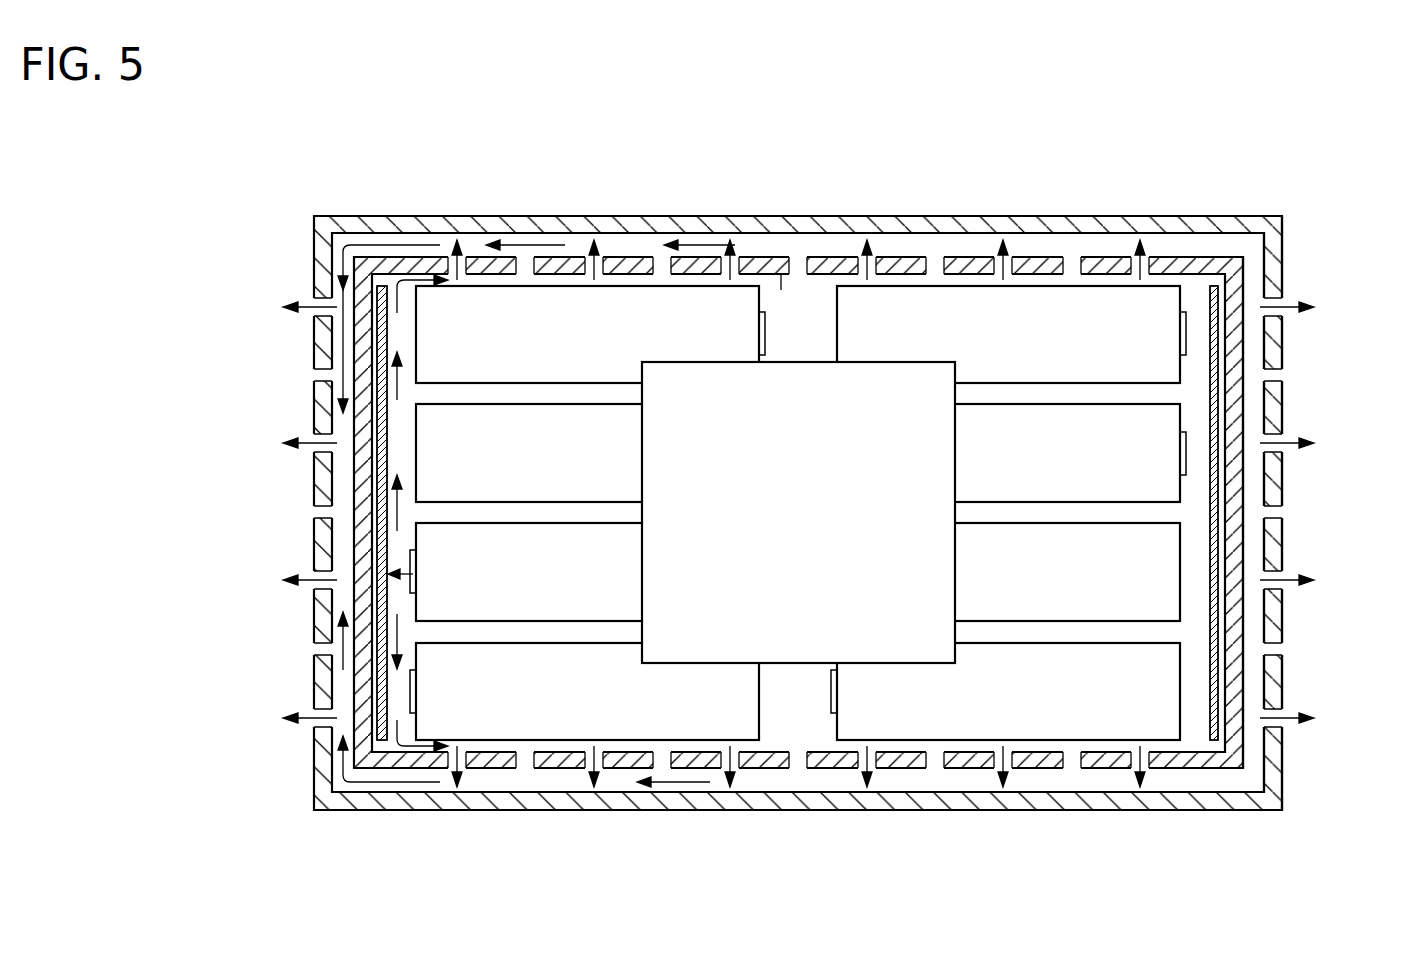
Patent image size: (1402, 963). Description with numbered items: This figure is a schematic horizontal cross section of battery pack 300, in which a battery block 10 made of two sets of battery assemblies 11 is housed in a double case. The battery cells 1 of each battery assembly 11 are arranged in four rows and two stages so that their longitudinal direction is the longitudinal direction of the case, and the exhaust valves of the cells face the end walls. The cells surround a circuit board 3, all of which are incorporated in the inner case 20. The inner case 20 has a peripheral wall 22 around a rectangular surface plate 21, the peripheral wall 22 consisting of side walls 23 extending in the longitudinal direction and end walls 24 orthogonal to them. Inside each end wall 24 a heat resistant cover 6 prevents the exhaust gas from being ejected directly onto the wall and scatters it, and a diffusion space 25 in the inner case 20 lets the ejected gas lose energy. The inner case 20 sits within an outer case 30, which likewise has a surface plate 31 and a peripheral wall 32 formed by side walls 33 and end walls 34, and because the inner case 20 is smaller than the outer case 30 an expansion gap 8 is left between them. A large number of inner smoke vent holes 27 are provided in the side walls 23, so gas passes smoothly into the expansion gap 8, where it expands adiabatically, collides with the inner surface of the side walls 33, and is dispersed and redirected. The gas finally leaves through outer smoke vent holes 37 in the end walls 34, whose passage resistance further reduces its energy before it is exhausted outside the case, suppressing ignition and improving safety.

The battery pack 300 is at (341, 109).
The inner case 20 is at (733, 84).
The peripheral wall 22 is at (587, 140).
The side walls 23 is at (567, 237).
The end walls 24 is at (370, 340).
The surface plate 21 is at (781, 297).
The inner smoke vent holes 27 is at (450, 252).
The outer case 30 is at (1183, 84).
The surface plate 31 is at (827, 217).
The peripheral wall 32 is at (1315, 142).
The side walls 33 is at (1025, 222).
The end walls 34 is at (1282, 287).
The expansion gap 8 is at (345, 338).
The outer smoke vent holes 37 is at (314, 441).
The diffusion space 25 is at (404, 539).
The heat resistant cover 6 is at (388, 422).
The battery cells 1 is at (573, 352).
The circuit board 3 is at (815, 527).
The battery assemblies 11 is at (618, 742).
The battery block 10 is at (948, 880).